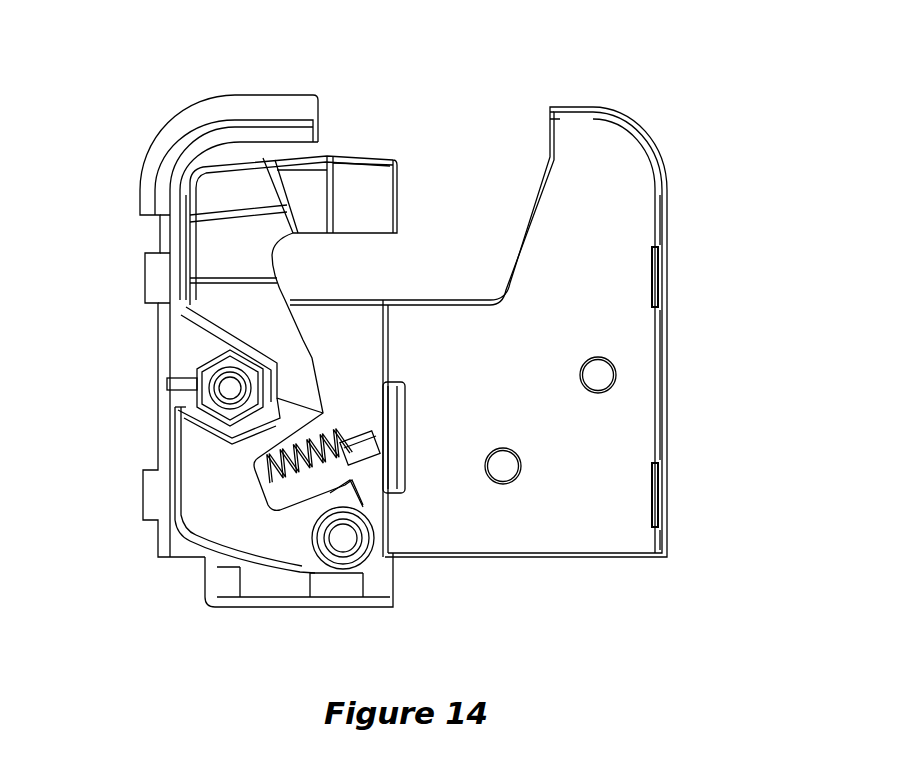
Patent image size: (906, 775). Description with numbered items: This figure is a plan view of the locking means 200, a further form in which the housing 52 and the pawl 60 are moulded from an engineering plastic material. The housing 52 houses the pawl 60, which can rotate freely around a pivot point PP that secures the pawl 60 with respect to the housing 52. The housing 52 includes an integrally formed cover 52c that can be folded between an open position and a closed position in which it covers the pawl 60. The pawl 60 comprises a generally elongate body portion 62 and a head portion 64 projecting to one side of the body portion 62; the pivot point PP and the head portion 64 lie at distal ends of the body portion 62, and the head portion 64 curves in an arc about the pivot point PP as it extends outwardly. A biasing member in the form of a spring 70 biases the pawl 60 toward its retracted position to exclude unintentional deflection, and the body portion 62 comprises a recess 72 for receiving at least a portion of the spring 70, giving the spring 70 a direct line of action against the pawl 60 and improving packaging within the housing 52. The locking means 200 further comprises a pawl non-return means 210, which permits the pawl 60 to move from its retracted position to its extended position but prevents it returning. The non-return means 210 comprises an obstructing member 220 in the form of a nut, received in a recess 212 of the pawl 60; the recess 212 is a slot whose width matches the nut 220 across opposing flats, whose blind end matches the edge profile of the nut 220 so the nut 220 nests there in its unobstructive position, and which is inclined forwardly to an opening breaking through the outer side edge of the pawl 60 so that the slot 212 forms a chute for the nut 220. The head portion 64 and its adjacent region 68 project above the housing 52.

The locking means 200 is at (528, 88).
The pawl 60 is at (370, 152).
The body portion 62 is at (217, 472).
The head portion 64 is at (337, 187).
The engagement portion 68 is at (378, 198).
The housing 52 is at (405, 562).
The cover 52c is at (608, 232).
The recess 72 is at (343, 423).
The spring 70 is at (270, 480).
The recess 212 is at (193, 330).
The pawl non-return means 210 is at (212, 352).
The obstructing member 220 is at (203, 384).
The pivot point PP is at (343, 537).